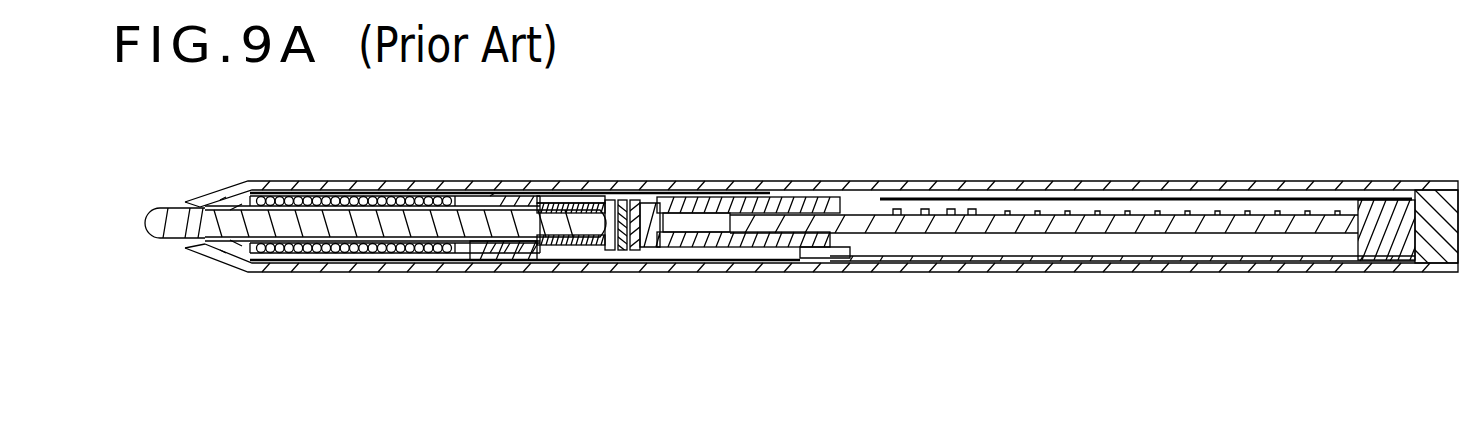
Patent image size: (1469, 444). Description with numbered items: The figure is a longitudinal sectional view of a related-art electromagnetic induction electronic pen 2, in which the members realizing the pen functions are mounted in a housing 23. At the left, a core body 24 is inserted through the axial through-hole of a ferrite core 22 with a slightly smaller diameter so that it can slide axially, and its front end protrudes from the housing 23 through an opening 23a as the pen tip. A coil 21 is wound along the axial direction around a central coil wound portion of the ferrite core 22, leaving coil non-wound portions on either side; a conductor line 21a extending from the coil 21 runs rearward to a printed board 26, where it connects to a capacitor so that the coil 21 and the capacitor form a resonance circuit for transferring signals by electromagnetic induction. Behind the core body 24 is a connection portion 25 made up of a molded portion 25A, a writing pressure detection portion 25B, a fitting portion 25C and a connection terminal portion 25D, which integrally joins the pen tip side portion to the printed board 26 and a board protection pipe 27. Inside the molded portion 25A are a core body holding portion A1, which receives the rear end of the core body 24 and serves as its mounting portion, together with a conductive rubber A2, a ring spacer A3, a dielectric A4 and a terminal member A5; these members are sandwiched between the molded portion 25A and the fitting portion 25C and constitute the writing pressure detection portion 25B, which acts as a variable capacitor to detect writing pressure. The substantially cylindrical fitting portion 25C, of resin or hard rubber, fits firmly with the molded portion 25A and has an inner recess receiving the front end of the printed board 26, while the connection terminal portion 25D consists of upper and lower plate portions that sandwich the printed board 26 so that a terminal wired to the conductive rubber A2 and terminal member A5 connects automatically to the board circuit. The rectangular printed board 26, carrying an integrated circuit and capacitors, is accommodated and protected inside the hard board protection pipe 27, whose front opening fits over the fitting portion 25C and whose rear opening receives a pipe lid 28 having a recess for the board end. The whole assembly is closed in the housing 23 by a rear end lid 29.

The electronic pen 2 is at (668, 130).
The coil 21 is at (342, 247).
The conductor line 21a is at (515, 193).
The ferrite core 22 is at (242, 243).
The housing 23 is at (1065, 182).
The opening of housing 23a is at (182, 211).
The core body 24 is at (174, 241).
The connection portion 25 is at (870, 395).
The molded portion 25A is at (506, 250).
The writing pressure detection portion 25B is at (717, 343).
The fitting portion 25C is at (773, 247).
The connection terminal portion 25D is at (822, 250).
The printed board 26 is at (870, 223).
The board protection pipe 27 is at (887, 255).
The pipe lid 28 is at (1403, 182).
The rear end lid 29 is at (1438, 255).
The core body holding portion A1 is at (558, 252).
The conductive rubber A2 is at (613, 252).
The ring spacer A3 is at (625, 252).
The dielectric A4 is at (636, 252).
The terminal member A5 is at (650, 212).